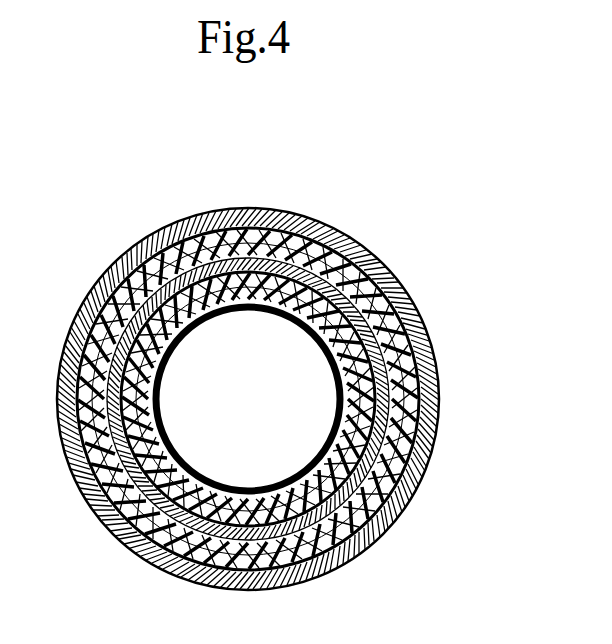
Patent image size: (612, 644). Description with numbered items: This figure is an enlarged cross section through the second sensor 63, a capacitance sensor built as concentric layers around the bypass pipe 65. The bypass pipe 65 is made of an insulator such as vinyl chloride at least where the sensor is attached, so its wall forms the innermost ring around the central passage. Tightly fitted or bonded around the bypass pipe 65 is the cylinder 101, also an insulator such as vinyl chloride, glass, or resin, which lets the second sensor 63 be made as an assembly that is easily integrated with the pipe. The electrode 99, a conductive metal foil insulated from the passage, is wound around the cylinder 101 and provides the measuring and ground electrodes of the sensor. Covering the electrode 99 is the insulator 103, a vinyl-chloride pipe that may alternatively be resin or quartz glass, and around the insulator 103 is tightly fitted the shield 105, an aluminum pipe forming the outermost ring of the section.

The second sensor 63 is at (291, 205).
The bypass pipe 65 is at (348, 414).
The electrode 99 is at (397, 362).
The cylinder 101 is at (393, 418).
The insulator 103 is at (382, 261).
The shield 105 is at (359, 244).